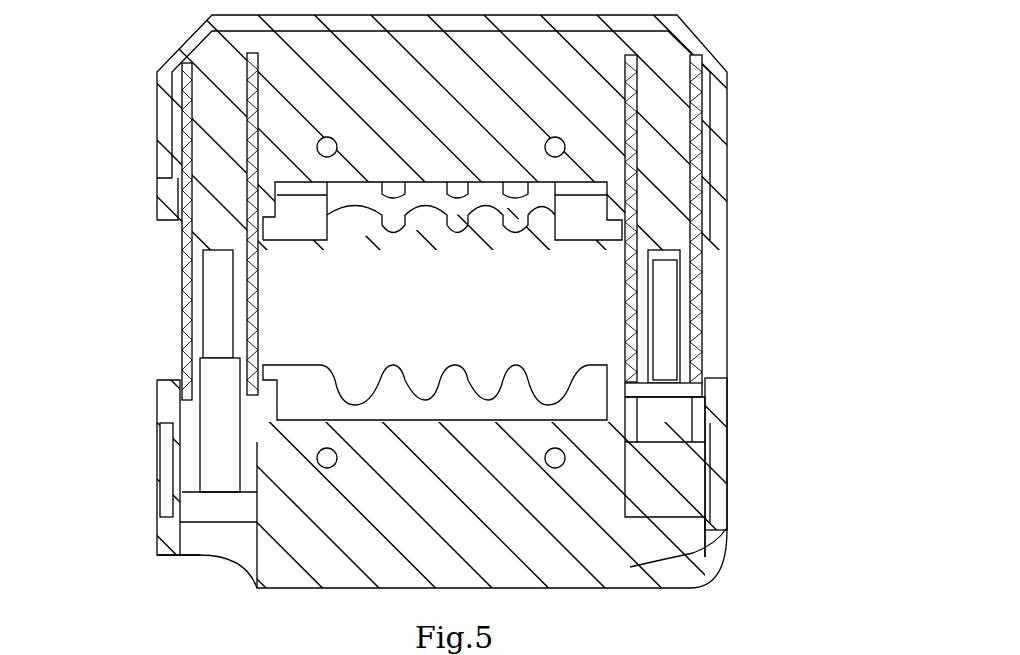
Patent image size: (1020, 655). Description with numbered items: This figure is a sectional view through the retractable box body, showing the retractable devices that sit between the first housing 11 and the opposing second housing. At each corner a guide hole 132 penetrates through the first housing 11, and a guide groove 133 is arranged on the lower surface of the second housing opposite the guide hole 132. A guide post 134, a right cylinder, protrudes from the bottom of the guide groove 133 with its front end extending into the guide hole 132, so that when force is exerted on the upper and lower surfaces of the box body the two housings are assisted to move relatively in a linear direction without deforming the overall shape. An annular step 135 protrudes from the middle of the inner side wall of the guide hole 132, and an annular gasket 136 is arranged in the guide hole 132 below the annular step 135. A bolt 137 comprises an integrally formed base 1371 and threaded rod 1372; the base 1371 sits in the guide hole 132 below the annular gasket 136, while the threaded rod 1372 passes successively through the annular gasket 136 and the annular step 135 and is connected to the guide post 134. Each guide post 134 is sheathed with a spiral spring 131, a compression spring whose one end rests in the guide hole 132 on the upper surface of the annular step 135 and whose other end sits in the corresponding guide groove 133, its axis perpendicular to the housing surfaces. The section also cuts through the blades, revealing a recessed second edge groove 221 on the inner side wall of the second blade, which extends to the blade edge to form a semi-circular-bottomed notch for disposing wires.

The first housing 11 is at (600, 495).
The spiral spring 131 is at (185, 282).
The guide hole 132 is at (212, 545).
The guide groove 133 is at (700, 88).
The guide post 134 is at (220, 215).
The annular step 135 is at (183, 412).
The annular gasket 136 is at (183, 487).
The bolt 137 is at (215, 432).
The base 1371 is at (205, 505).
The threaded rod 1372 is at (213, 312).
The second edge groove 221 is at (540, 197).